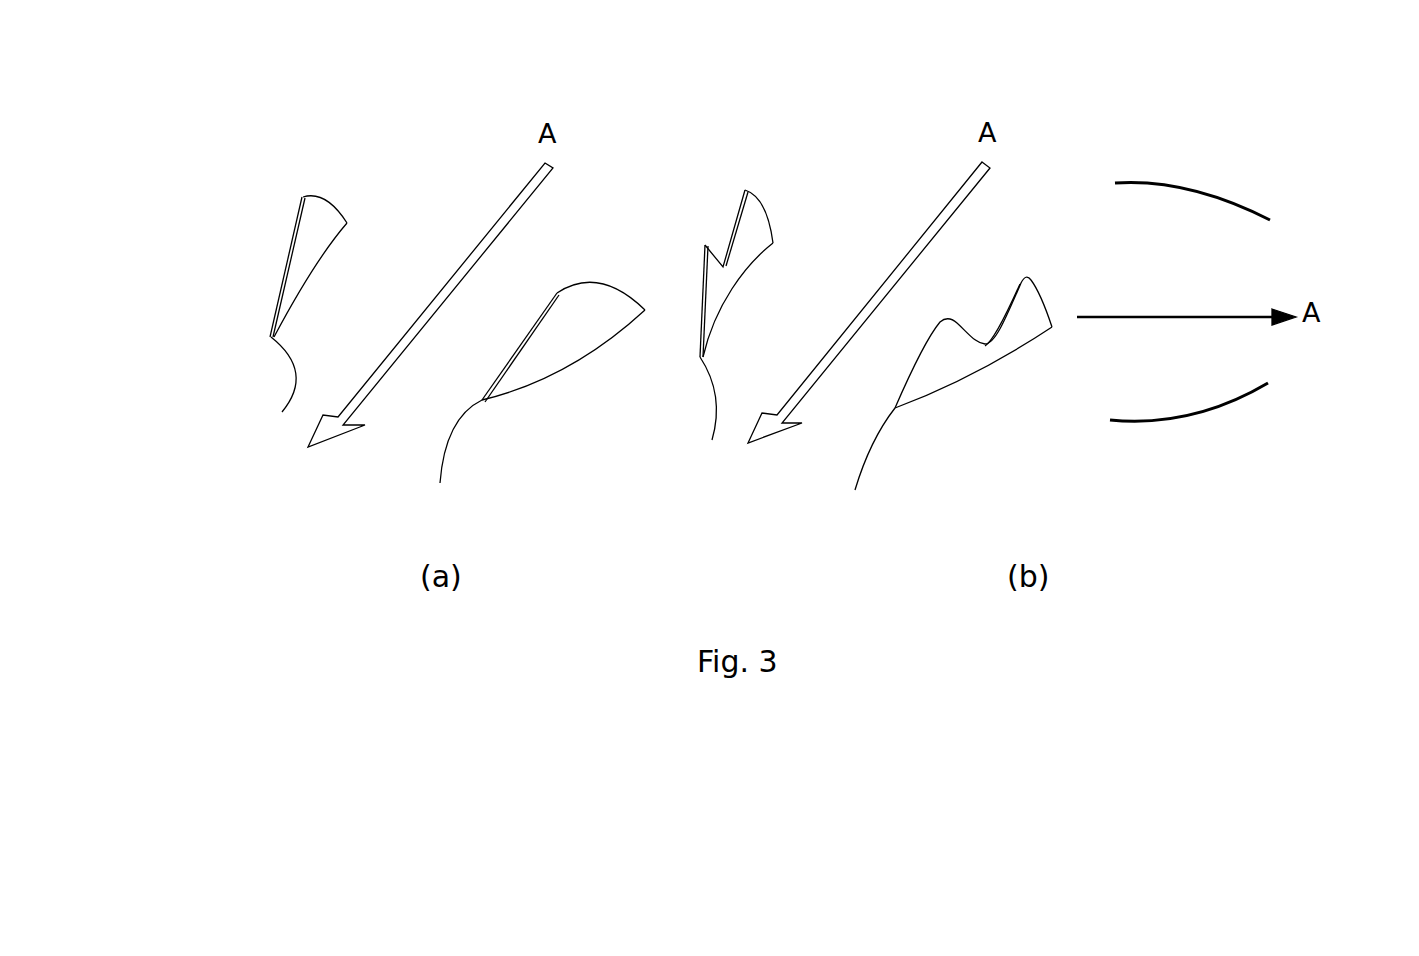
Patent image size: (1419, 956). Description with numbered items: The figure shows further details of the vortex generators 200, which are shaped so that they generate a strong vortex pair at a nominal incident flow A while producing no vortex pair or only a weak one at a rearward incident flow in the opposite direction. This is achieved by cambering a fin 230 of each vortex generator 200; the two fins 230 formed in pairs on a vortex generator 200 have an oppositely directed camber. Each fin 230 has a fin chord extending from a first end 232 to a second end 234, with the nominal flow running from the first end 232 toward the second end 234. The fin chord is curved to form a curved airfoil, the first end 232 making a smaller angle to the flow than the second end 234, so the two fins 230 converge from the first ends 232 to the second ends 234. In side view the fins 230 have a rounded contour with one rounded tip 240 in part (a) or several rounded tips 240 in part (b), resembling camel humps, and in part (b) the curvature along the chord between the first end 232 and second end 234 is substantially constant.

The vortex generator 200 is at (467, 230).
The fin 230 is at (277, 252).
The first end 232 is at (347, 223).
The second end 234 is at (1282, 148).
The rounded tip 240 is at (302, 197).